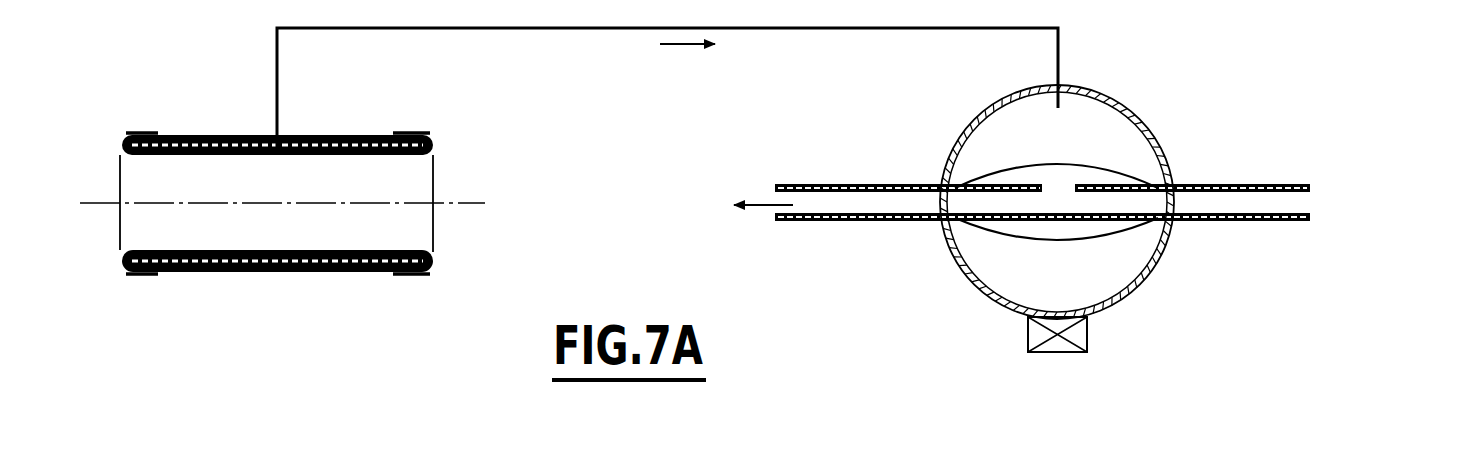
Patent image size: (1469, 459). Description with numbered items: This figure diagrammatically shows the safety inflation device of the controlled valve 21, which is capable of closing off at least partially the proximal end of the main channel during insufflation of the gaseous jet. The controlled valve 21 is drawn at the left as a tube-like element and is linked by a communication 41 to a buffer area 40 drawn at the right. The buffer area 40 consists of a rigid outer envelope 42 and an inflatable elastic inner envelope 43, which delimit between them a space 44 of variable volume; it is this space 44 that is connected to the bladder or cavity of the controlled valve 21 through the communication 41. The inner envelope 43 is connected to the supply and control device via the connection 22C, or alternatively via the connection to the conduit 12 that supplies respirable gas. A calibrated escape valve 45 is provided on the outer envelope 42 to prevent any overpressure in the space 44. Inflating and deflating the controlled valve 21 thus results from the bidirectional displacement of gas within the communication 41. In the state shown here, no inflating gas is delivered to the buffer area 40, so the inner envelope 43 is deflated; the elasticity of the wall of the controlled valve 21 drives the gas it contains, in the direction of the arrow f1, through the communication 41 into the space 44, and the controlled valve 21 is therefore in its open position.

The controlled valve 21 is at (205, 130).
The communication 41 is at (878, 28).
The arrow indicating gas flow f1 is at (700, 47).
The connection 22C is at (1428, 203).
The conduit 12 is at (755, 205).
The buffer area 40 is at (1084, 192).
The rigid outer envelope 42 is at (1145, 282).
The inflatable inner envelope 43 is at (1058, 170).
The space of variable volume 44 is at (1002, 270).
The calibrated escape valve 45 is at (1082, 336).